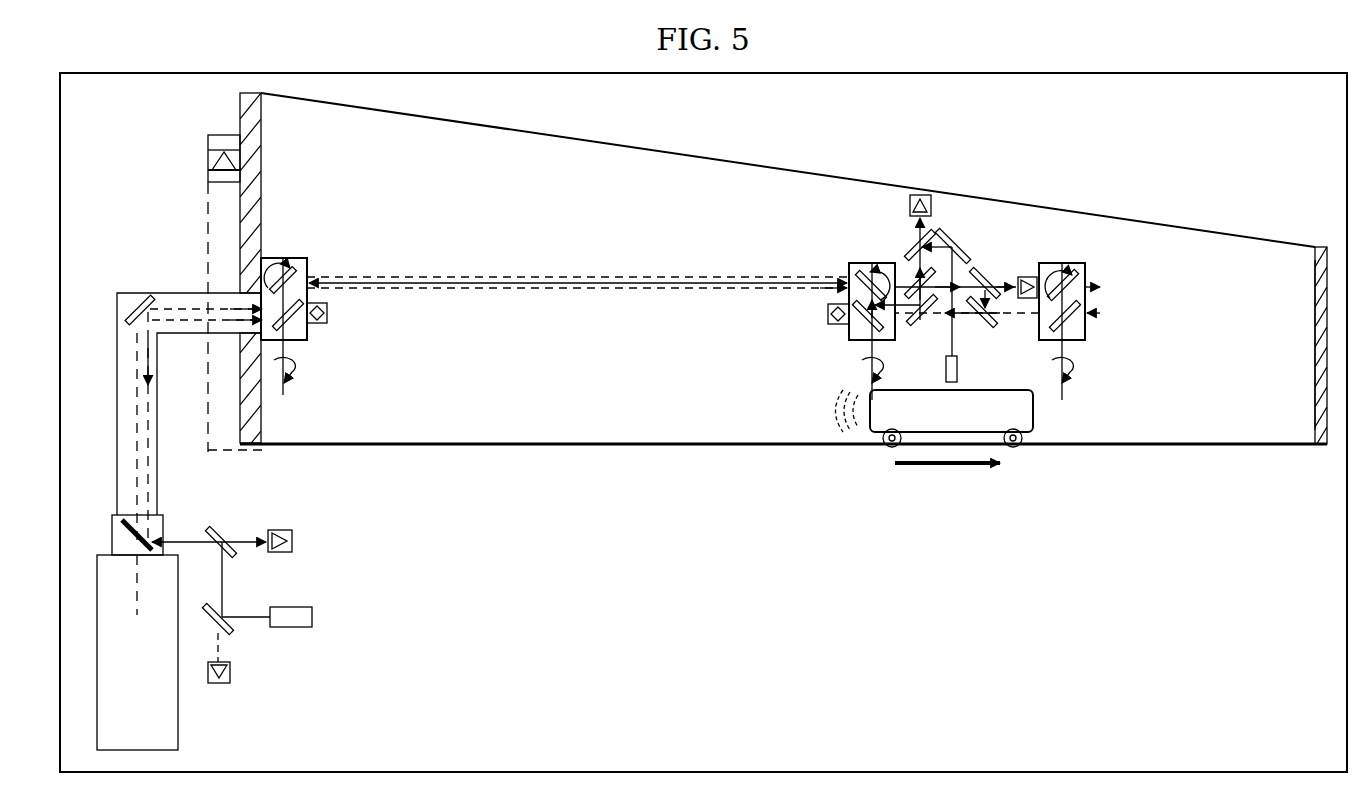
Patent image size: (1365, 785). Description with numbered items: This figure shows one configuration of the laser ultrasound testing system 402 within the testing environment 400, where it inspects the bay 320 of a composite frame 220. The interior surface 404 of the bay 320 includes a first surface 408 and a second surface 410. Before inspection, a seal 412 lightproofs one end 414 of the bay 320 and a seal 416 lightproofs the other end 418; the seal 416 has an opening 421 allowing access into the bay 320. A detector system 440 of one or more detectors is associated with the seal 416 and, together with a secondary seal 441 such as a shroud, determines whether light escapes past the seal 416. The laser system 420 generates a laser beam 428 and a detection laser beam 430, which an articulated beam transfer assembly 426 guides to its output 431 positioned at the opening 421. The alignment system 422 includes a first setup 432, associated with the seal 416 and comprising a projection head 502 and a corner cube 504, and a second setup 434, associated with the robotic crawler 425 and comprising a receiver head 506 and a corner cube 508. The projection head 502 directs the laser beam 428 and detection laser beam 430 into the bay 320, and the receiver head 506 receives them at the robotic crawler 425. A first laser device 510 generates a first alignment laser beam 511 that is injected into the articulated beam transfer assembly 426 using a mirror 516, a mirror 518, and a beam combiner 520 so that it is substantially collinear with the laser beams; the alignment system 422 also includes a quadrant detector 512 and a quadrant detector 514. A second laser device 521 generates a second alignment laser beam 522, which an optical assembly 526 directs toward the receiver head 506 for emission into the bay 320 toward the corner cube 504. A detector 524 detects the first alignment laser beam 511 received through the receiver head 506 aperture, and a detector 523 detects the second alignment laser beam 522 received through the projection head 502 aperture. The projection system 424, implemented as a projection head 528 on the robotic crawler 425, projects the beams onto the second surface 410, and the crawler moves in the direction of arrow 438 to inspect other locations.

The testing environment 400 is at (1013, 71).
The laser ultrasound testing system 402 is at (198, 712).
The interior surface 404 is at (1248, 238).
The first surface 408 is at (1165, 225).
The second surface 410 is at (1147, 443).
The seal 412 is at (1320, 247).
The end 414 is at (1312, 340).
The seal 416 is at (240, 210).
The end 418 is at (285, 165).
The laser system 420 is at (117, 678).
The opening 421 is at (250, 300).
The alignment system 422 is at (320, 342).
The projection system 424 is at (1075, 260).
The robotic crawler 425 is at (1033, 412).
The articulated beam transfer assembly 426 is at (158, 462).
The laser beam 428 is at (580, 275).
The detection laser beam 430 is at (575, 292).
The output 431 is at (240, 320).
The first setup 432 is at (325, 265).
The second setup 434 is at (975, 230).
The arrow 438 is at (950, 467).
The detector system 440 is at (222, 143).
The secondary seal 441 is at (208, 197).
The composite frame 220 is at (1205, 215).
The bay 320 is at (1222, 388).
The projection head 502 is at (295, 257).
The corner cube 504 is at (327, 315).
The receiver head 506 is at (853, 262).
The corner cube 508 is at (828, 313).
The first laser device 510 is at (312, 620).
The first alignment laser beam 511 is at (245, 615).
The quadrant detector 512 is at (293, 538).
The quadrant detector 514 is at (924, 195).
The mirror 516 is at (235, 628).
The mirror 518 is at (224, 535).
The beam combiner 520 is at (120, 528).
The second laser device 521 is at (951, 384).
The second alignment laser beam 522 is at (952, 340).
The detector 523 is at (231, 675).
The detector 524 is at (1020, 278).
The optical assembly 526 is at (968, 325).
The projection head 528 is at (1090, 322).